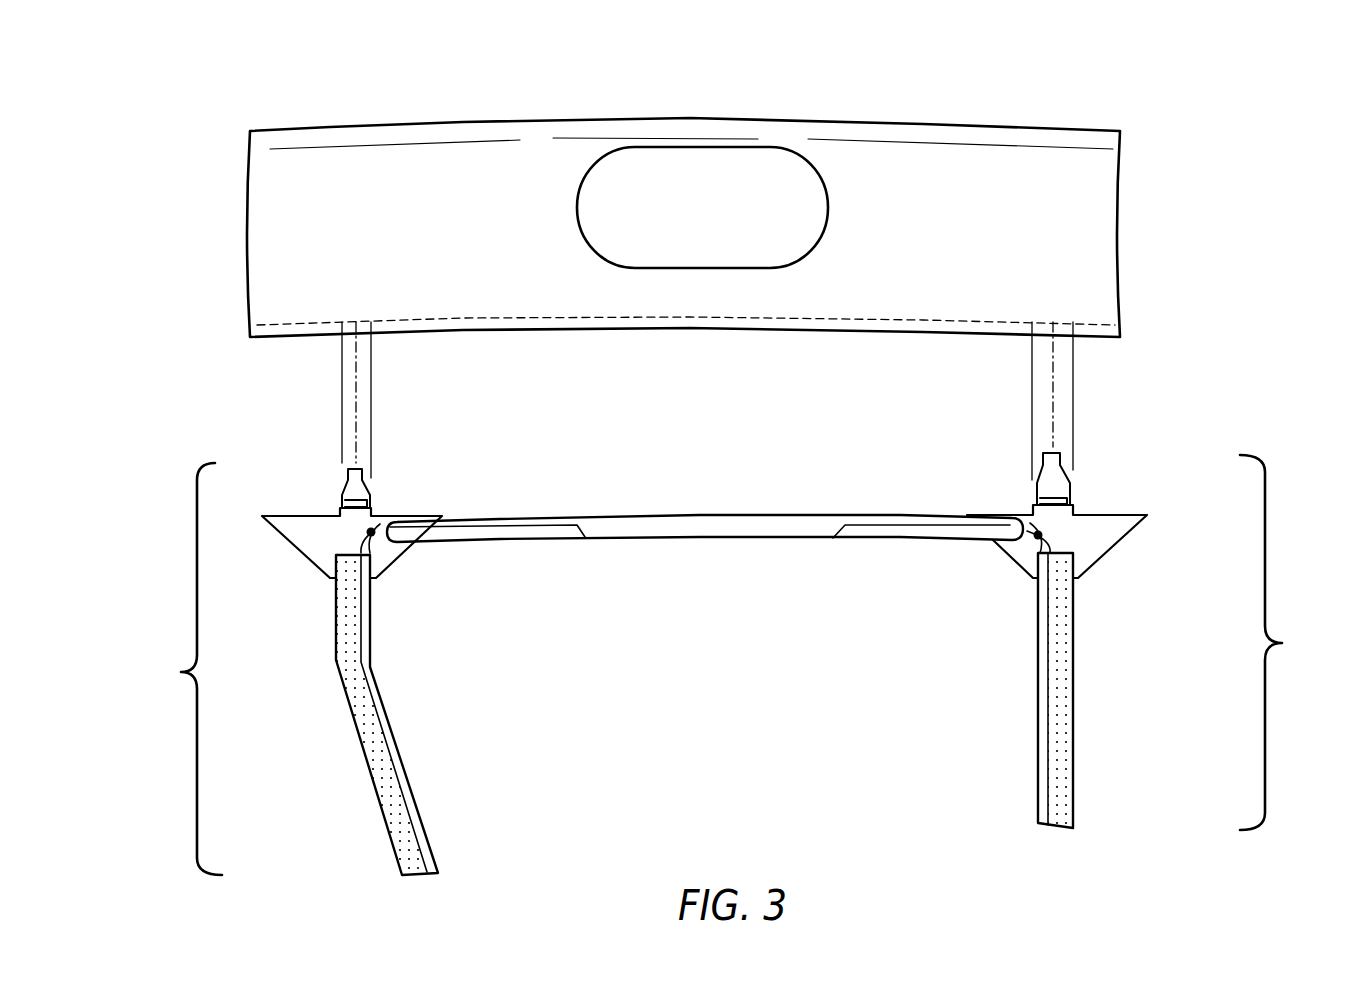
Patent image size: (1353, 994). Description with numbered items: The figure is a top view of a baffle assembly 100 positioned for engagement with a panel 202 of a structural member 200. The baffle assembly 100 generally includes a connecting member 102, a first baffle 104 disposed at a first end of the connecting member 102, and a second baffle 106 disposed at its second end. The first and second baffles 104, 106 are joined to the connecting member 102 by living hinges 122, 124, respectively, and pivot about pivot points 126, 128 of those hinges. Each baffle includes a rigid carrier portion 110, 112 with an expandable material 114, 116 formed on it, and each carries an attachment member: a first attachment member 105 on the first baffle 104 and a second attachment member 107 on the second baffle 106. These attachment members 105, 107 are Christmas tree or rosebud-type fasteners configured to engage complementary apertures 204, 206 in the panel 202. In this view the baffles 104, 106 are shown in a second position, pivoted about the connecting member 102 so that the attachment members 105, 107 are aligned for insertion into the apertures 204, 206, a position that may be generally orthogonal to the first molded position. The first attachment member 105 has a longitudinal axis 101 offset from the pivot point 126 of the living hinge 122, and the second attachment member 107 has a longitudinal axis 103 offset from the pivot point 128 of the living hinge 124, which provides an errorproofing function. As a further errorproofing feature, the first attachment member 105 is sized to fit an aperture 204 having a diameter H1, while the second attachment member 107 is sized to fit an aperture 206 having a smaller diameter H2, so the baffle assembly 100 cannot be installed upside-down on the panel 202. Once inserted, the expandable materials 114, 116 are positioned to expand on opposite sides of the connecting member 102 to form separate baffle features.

The baffle assembly 100 is at (1170, 677).
The longitudinal axis 101 is at (1055, 400).
The connecting member 102 is at (722, 550).
The longitudinal axis 103 is at (362, 440).
The first baffle 104 is at (1284, 642).
The first attachment member 105 is at (1077, 475).
The second baffle 106 is at (181, 669).
The second attachment member 107 is at (337, 485).
The rigid carrier portion 110 is at (1037, 750).
The rigid carrier portion 112 is at (390, 717).
The expandable material 114 is at (1068, 678).
The expandable material 116 is at (340, 682).
The living hinge 122 is at (1050, 528).
The living hinge 124 is at (357, 538).
The pivot point 126 is at (1033, 543).
The pivot point 128 is at (377, 540).
The structural member 200 is at (993, 90).
The panel 202 is at (753, 333).
The aperture 204 is at (1065, 342).
The aperture 206 is at (350, 337).
The aperture diameter H1 is at (1098, 380).
The aperture diameter H2 is at (313, 379).